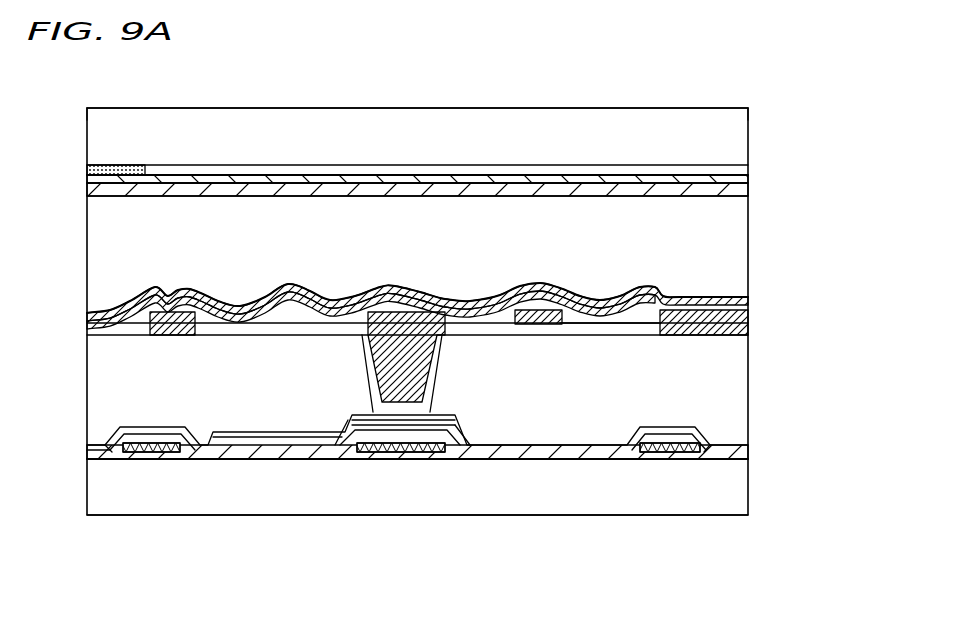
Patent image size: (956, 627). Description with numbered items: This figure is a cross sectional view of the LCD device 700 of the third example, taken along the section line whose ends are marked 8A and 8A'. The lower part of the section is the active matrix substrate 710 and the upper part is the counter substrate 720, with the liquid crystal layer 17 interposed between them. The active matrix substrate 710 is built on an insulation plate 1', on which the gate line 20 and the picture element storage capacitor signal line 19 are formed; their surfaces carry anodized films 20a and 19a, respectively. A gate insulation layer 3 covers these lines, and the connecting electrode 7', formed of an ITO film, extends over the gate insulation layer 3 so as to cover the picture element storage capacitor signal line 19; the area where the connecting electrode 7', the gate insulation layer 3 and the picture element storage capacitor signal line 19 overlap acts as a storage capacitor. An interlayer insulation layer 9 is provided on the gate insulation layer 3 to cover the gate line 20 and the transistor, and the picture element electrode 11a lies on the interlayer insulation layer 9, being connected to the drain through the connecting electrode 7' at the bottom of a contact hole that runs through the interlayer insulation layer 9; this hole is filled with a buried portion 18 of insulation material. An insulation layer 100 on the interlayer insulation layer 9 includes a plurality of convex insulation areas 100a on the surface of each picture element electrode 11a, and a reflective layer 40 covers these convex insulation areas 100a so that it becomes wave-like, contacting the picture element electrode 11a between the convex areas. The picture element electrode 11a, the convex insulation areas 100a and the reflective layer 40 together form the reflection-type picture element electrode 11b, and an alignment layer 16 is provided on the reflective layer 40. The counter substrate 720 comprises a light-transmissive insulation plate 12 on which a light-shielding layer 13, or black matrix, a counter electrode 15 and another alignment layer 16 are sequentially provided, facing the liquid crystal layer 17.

The LCD device 700 is at (770, 45).
The counter substrate 720 is at (792, 105).
The active matrix substrate 710 is at (830, 280).
The light-transmissive insulation plate 12 is at (533, 130).
The light-shielding layer 13 is at (130, 165).
The counter electrode 15 is at (240, 178).
The alignment layer 16 is at (748, 190).
The liquid crystal layer 17 is at (115, 243).
The buried portion 18 is at (404, 290).
The insulation layer 100 is at (748, 318).
The convex insulation areas 100a is at (548, 335).
The reflective layer 40 is at (520, 335).
The picture element electrode 11a is at (600, 335).
The reflection-type picture element electrode 11b is at (643, 565).
The interlayer insulation layer 9 is at (115, 393).
The gate insulation layer 3 is at (236, 458).
The connecting electrode 7' is at (334, 493).
The picture element storage capacitor signal line 19 is at (408, 455).
The anodized film 19a is at (440, 445).
The gate line 20 is at (150, 452).
The anodized film 20a is at (113, 452).
The insulation plate 1' is at (447, 487).
The section line end 8A is at (766, 103).
The section line end 8A' is at (67, 103).